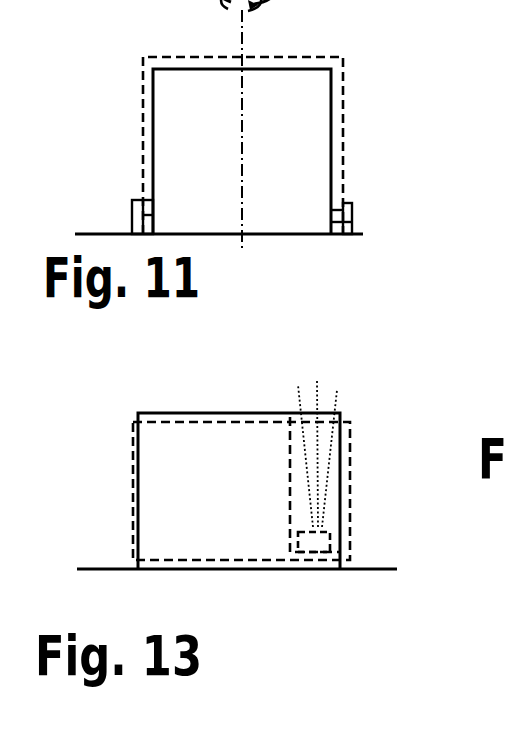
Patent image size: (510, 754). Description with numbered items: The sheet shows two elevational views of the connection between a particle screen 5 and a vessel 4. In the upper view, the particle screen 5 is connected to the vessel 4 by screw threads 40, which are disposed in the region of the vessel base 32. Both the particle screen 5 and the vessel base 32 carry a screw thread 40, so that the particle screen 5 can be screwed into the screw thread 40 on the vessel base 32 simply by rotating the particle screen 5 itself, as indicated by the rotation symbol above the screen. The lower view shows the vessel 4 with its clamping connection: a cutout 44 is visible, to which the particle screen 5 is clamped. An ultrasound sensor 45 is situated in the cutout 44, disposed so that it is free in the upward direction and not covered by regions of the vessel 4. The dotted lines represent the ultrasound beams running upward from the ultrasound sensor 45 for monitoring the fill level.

In FIG. 11, the vessel 4 is at (236, 70).
In FIG. 13, the vessel 4 is at (262, 569).
In FIG. 11, the particle screen 5 is at (143, 143).
In FIG. 13, the particle screen 5 is at (350, 457).
In FIG. 11, the vessel base 32 is at (308, 235).
In FIG. 11, the screw thread 40 is at (343, 202).
In FIG. 13, the cutout 44 is at (290, 513).
In FIG. 13, the ultrasound sensor 45 is at (328, 533).